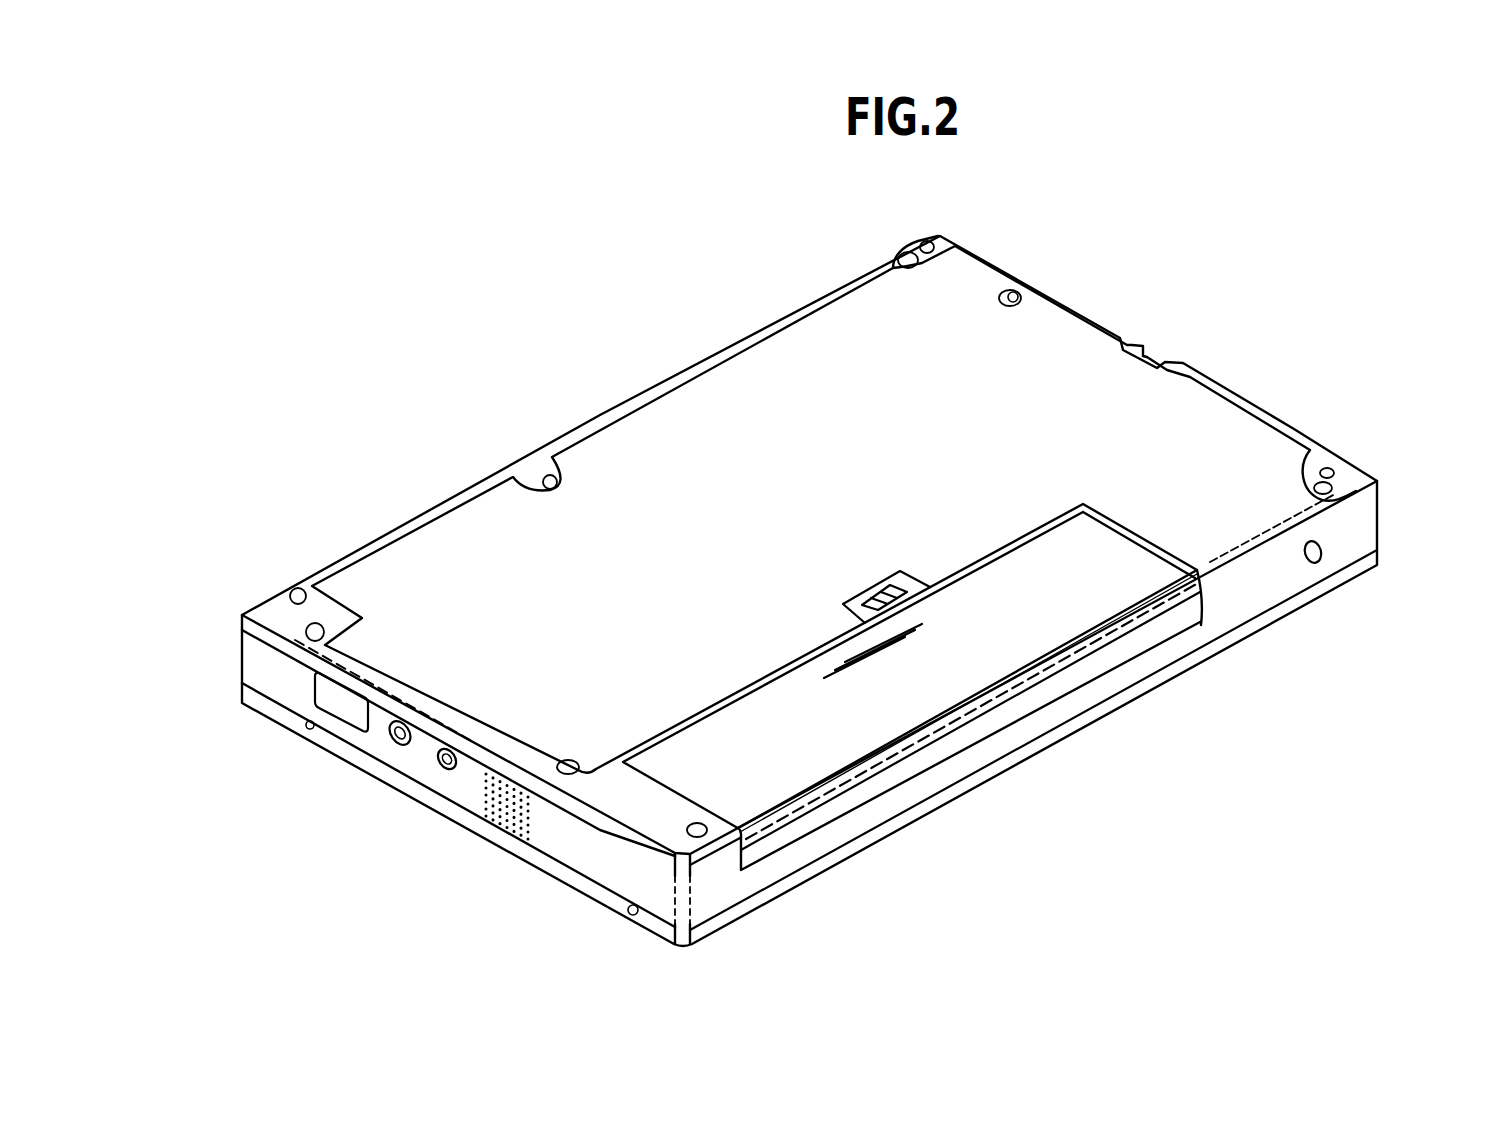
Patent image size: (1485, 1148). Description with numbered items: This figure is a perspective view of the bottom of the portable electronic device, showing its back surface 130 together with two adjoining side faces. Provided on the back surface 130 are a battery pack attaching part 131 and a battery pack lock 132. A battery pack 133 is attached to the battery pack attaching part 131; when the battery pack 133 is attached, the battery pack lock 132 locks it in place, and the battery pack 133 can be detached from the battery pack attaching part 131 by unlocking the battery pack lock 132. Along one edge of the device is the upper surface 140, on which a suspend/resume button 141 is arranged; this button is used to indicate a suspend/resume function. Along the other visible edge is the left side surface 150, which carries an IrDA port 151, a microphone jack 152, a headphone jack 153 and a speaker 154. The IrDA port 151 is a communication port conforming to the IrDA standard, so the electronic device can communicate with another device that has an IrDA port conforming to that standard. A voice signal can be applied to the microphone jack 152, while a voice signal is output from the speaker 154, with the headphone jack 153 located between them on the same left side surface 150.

The back surface 130 is at (836, 329).
The battery pack attaching part 131 is at (1130, 530).
The battery pack lock 132 is at (878, 593).
The battery pack 133 is at (948, 682).
The upper surface 140 is at (1366, 540).
The suspend/resume button 141 is at (1314, 562).
The left side surface 150 is at (255, 682).
The IrDA port 151 is at (337, 702).
The microphone jack 152 is at (393, 742).
The headphone jack 153 is at (441, 764).
The speaker 154 is at (503, 812).